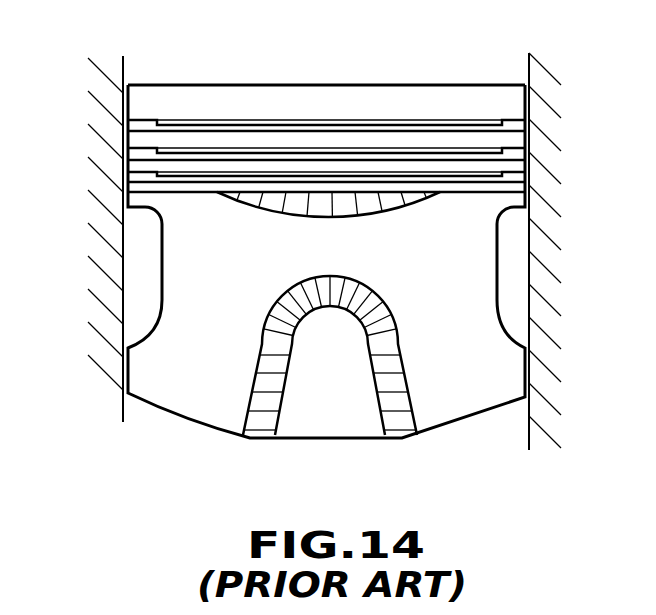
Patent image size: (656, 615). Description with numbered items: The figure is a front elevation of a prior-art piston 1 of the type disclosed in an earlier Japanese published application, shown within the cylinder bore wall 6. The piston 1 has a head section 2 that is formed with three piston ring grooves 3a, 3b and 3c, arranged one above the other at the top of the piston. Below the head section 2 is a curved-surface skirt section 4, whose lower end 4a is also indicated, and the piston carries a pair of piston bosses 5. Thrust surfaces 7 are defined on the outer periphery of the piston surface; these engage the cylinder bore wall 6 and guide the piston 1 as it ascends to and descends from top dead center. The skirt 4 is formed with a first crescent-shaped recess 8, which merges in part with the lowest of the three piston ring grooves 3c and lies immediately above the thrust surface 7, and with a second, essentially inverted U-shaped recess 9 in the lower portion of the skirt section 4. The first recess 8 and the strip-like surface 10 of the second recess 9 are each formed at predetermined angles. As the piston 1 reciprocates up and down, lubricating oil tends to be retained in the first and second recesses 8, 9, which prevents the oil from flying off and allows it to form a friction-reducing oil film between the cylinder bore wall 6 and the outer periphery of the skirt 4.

The piston 1 is at (538, 180).
The head section 2 is at (505, 102).
The piston ring groove 3a is at (523, 132).
The piston ring groove 3b is at (524, 158).
The piston ring groove 3c is at (518, 183).
The skirt section 4 is at (163, 372).
The skirt lower end 4a is at (340, 440).
The piston boss 5 is at (160, 286).
The cylinder bore wall 6 is at (522, 315).
The thrust surface 7 is at (313, 250).
The first crescent-shaped recess 8 is at (332, 200).
The second inverted U-shaped recess 9 is at (311, 388).
The strip-like surface 10 is at (392, 349).